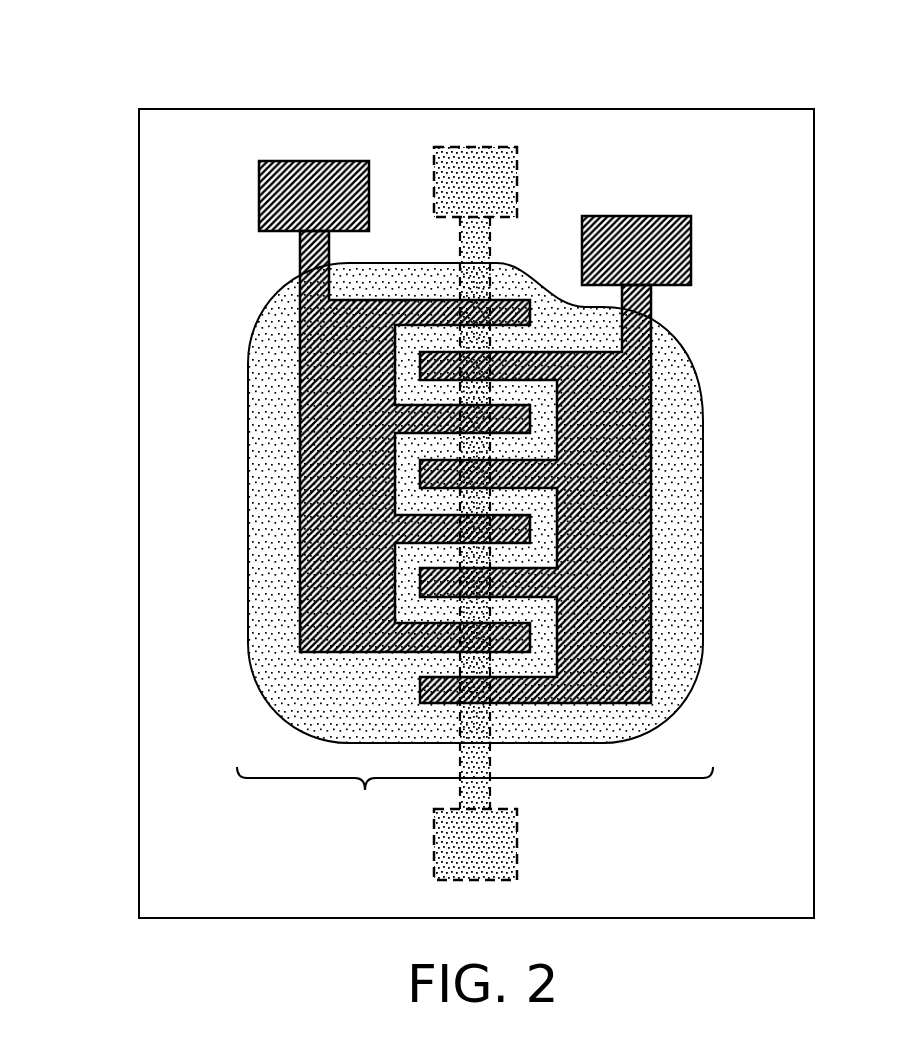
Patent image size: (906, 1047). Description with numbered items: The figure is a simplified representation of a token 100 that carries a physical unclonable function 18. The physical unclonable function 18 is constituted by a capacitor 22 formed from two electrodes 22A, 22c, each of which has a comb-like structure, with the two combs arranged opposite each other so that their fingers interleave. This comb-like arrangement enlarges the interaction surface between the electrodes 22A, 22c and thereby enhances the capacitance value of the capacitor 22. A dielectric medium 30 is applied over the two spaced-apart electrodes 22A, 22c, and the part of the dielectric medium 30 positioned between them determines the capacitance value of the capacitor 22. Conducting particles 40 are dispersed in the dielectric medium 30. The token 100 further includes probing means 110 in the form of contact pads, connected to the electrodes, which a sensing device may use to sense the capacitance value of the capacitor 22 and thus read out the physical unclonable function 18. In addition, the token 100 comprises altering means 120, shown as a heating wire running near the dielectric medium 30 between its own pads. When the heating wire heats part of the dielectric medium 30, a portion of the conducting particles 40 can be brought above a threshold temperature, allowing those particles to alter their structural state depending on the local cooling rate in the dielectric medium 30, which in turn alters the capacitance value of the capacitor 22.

The token 100 is at (115, 65).
The physical unclonable function 18 is at (427, 503).
The probing means 110 is at (259, 196).
The altering means 120 is at (517, 181).
The electrode 22A is at (330, 472).
The electrode 22c is at (623, 640).
The capacitor 22 is at (475, 793).
The dielectric medium 30 is at (683, 477).
The conducting particles 40 is at (683, 553).